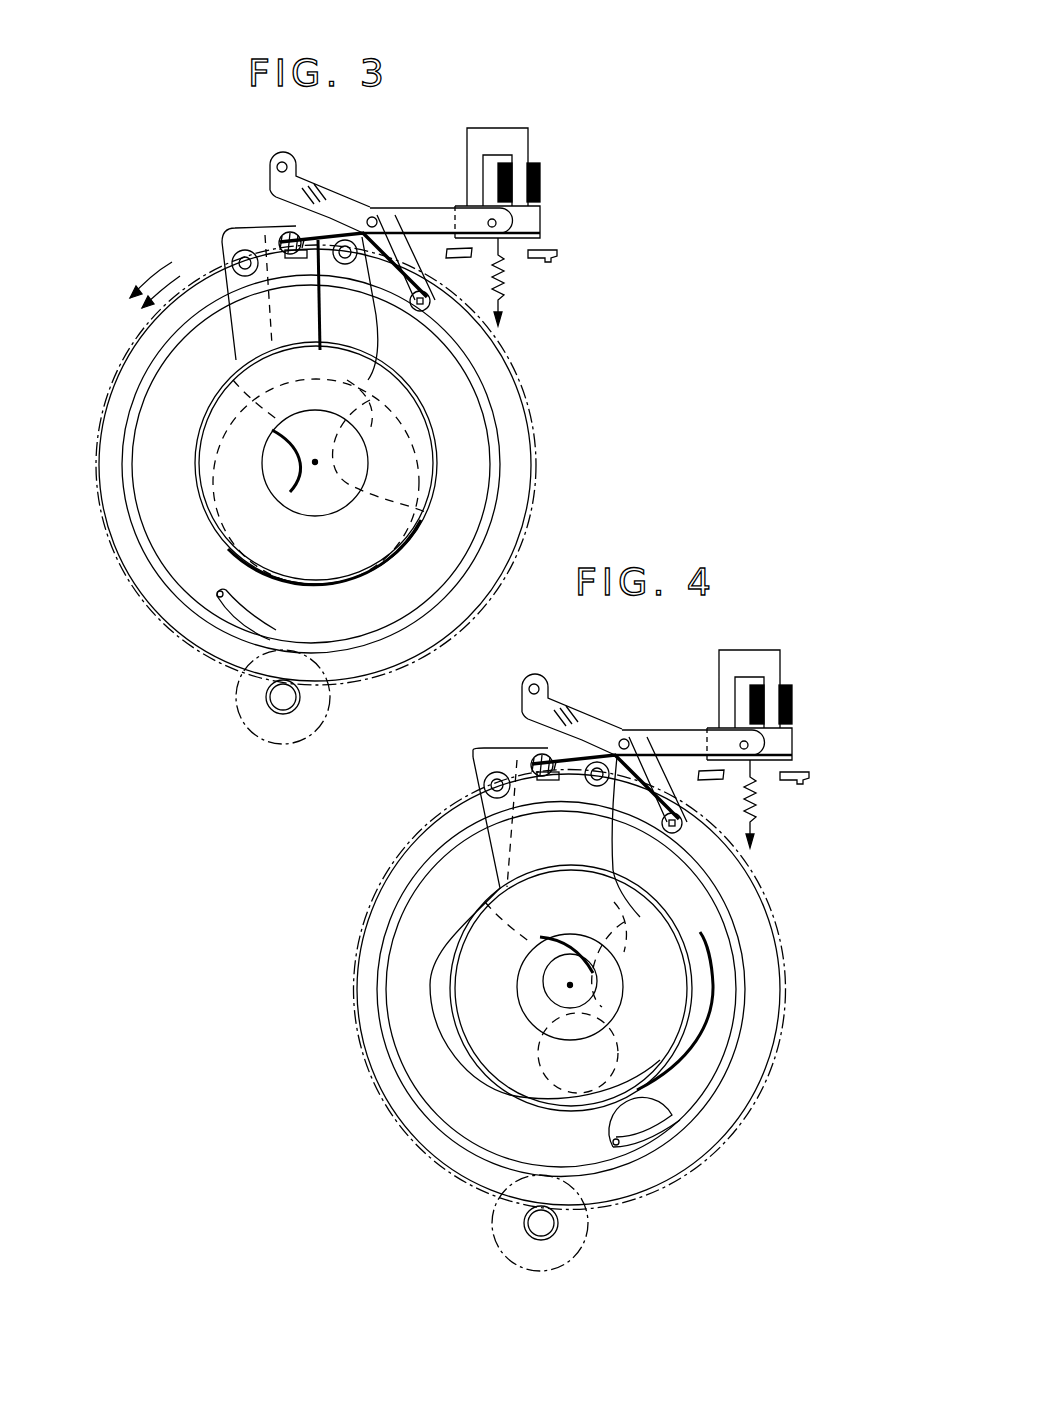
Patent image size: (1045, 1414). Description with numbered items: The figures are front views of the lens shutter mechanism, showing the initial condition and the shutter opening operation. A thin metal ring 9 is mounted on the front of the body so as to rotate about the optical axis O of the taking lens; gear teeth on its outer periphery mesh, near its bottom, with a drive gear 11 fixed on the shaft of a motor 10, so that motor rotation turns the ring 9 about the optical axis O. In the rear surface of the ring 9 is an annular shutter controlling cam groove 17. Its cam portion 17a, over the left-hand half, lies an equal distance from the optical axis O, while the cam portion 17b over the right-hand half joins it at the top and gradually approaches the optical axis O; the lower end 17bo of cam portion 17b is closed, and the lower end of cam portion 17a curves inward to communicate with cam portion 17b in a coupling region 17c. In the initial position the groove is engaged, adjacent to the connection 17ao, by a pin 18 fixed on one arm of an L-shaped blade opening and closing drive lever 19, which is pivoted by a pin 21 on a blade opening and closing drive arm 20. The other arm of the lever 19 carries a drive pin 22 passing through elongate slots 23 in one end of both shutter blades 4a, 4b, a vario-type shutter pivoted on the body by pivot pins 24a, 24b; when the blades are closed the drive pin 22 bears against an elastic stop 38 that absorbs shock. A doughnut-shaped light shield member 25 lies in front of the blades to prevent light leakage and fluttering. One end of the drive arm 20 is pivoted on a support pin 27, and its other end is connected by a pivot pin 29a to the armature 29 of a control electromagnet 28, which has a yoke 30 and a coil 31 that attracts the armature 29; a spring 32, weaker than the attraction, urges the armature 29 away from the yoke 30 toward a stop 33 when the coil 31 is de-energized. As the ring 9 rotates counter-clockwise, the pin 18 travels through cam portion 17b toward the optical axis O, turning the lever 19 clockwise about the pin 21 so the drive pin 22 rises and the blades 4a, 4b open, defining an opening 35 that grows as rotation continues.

In FIG. 3, the shutter blade 4a is at (232, 346).
In FIG. 4, the shutter blade 4a is at (545, 923).
In FIG. 3, the shutter blade 4b is at (378, 340).
In FIG. 4, the shutter blade 4b is at (631, 837).
In FIG. 3, the ring 9 is at (528, 450).
In FIG. 4, the ring 9 is at (586, 990).
In FIG. 3, the motor 10 is at (290, 742).
In FIG. 4, the motor 10 is at (526, 1223).
In FIG. 3, the drive gear 11 is at (300, 706).
In FIG. 4, the drive gear 11 is at (574, 1228).
In FIG. 3, the shutter controlling cam groove 17 is at (492, 398).
In FIG. 4, the shutter controlling cam groove 17 is at (595, 989).
In FIG. 3, the cam portion 17a is at (134, 360).
In FIG. 4, the cam portion 17a is at (548, 989).
In FIG. 3, the connection 17ao is at (412, 305).
In FIG. 4, the connection 17ao is at (540, 832).
In FIG. 3, the cam portion 17b is at (493, 485).
In FIG. 4, the cam portion 17b is at (643, 988).
In FIG. 3, the lower end 17bo is at (218, 590).
In FIG. 4, the lower end 17bo is at (585, 1131).
In FIG. 3, the coupling region 17c is at (258, 630).
In FIG. 4, the coupling region 17c is at (656, 1130).
In FIG. 3, the pin 18 is at (430, 297).
In FIG. 4, the pin 18 is at (699, 830).
In FIG. 3, the blade opening and closing drive lever 19 is at (400, 240).
In FIG. 4, the blade opening and closing drive lever 19 is at (674, 772).
In FIG. 3, the blade opening and closing drive arm 20 is at (432, 222).
In FIG. 4, the blade opening and closing drive arm 20 is at (685, 720).
In FIG. 3, the pin 21 is at (374, 214).
In FIG. 4, the pin 21 is at (634, 716).
In FIG. 3, the drive pin 22 is at (310, 200).
In FIG. 4, the drive pin 22 is at (514, 733).
In FIG. 3, the elongate slots 23 is at (290, 236).
In FIG. 4, the elongate slots 23 is at (570, 721).
In FIG. 3, the pivot pin 24a is at (246, 277).
In FIG. 4, the pivot pin 24a is at (451, 777).
In FIG. 3, the pivot pin 24b is at (346, 262).
In FIG. 4, the pivot pin 24b is at (605, 804).
In FIG. 3, the front light shield member 25 is at (418, 418).
In FIG. 4, the front light shield member 25 is at (599, 972).
In FIG. 3, the support pin 27 is at (288, 162).
In FIG. 4, the support pin 27 is at (560, 672).
In FIG. 3, the control electromagnet 28 is at (543, 161).
In FIG. 4, the control electromagnet 28 is at (814, 649).
In FIG. 3, the armature 29 is at (541, 210).
In FIG. 4, the armature 29 is at (812, 722).
In FIG. 3, the pivot pin 29a is at (497, 223).
In FIG. 4, the pivot pin 29a is at (797, 745).
In FIG. 3, the yoke 30 is at (496, 128).
In FIG. 4, the yoke 30 is at (746, 629).
In FIG. 3, the coil 31 is at (541, 176).
In FIG. 4, the coil 31 is at (813, 688).
In FIG. 3, the spring 32 is at (500, 284).
In FIG. 4, the spring 32 is at (771, 813).
In FIG. 3, the stop 33 is at (548, 260).
In FIG. 4, the stop 33 is at (798, 790).
In FIG. 4, the opening 35 is at (603, 981).
In FIG. 3, the stop 38 is at (294, 258).
In FIG. 4, the stop 38 is at (552, 804).
In FIG. 3, the optical axis O is at (314, 466).
In FIG. 4, the optical axis O is at (546, 983).